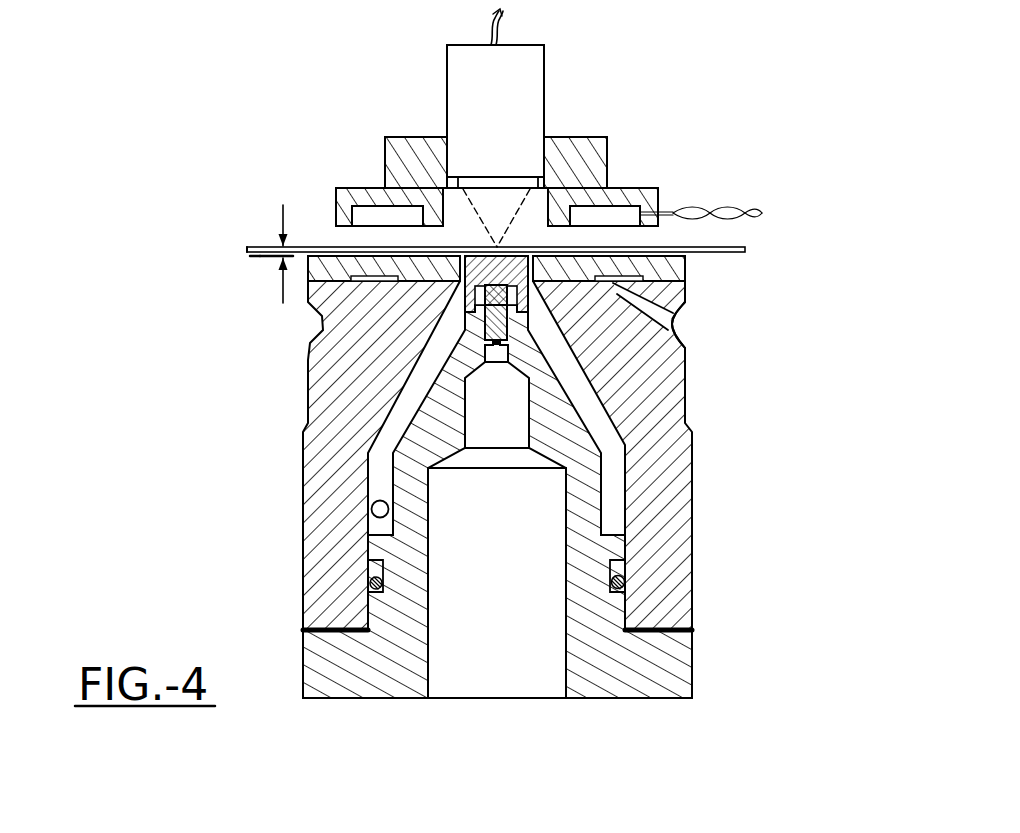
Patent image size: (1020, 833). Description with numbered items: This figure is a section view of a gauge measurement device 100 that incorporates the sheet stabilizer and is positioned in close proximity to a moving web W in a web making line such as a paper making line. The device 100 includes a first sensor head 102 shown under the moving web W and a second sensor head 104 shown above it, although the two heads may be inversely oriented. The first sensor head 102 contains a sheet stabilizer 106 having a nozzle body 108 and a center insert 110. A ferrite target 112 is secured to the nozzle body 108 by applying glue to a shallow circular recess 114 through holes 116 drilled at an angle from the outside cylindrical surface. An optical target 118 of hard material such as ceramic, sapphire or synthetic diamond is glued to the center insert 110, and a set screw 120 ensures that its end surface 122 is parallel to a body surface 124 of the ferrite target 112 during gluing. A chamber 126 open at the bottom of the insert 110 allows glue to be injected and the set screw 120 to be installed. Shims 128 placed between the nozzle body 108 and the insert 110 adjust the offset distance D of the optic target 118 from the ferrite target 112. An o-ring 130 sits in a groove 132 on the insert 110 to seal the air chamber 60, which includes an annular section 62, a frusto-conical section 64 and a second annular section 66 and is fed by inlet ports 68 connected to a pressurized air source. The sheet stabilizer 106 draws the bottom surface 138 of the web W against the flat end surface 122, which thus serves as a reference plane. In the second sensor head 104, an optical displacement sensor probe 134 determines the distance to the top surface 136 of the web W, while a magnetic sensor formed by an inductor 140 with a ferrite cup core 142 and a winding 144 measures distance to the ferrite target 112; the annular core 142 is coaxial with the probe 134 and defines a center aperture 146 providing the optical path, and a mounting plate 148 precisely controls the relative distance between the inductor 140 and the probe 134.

The gauge measurement device 100 is at (232, 133).
The first sensor head 102 is at (301, 494).
The second sensor head 104 is at (383, 132).
The sheet stabilizer 106 is at (362, 679).
The nozzle body 108 is at (343, 430).
The center insert 110 is at (647, 704).
The ferrite target 112 is at (349, 269).
The shallow circular recess 114 is at (364, 284).
The holes 116 is at (685, 327).
The optical target 118 is at (459, 292).
The set screw 120 is at (515, 339).
The end surface 122 is at (548, 248).
The body surface 124 is at (553, 275).
The chamber 126 is at (466, 689).
The shims 128 is at (328, 635).
The o-ring 130 is at (630, 582).
The groove 132 is at (630, 569).
The optical displacement sensor probe 134 is at (449, 58).
The top surface 136 is at (246, 245).
The bottom surface 138 is at (249, 257).
The inductor 140 is at (356, 185).
The ferrite cup core 142 is at (662, 181).
The winding 144 is at (355, 212).
The center aperture 146 is at (532, 197).
The mounting plate 148 is at (580, 130).
The air chamber 60 is at (590, 411).
The annular section 62 is at (621, 512).
The frusto-conical section 64 is at (608, 441).
The second annular section 66 is at (678, 314).
The inlet ports 68 is at (368, 516).
The moving web W is at (740, 247).
The offset distance D is at (277, 242).